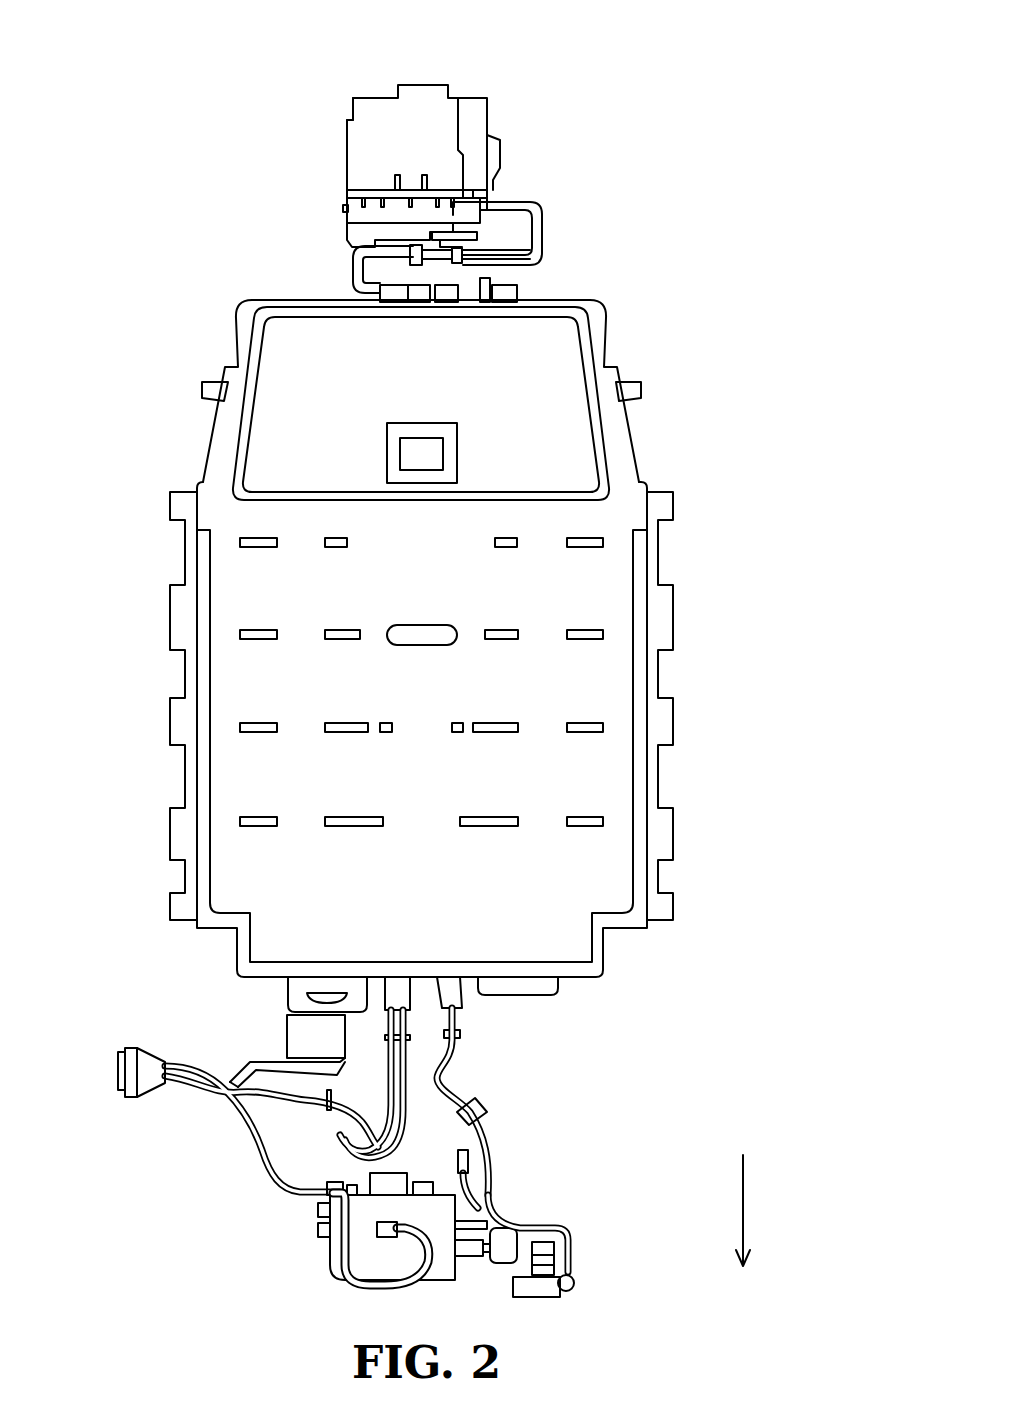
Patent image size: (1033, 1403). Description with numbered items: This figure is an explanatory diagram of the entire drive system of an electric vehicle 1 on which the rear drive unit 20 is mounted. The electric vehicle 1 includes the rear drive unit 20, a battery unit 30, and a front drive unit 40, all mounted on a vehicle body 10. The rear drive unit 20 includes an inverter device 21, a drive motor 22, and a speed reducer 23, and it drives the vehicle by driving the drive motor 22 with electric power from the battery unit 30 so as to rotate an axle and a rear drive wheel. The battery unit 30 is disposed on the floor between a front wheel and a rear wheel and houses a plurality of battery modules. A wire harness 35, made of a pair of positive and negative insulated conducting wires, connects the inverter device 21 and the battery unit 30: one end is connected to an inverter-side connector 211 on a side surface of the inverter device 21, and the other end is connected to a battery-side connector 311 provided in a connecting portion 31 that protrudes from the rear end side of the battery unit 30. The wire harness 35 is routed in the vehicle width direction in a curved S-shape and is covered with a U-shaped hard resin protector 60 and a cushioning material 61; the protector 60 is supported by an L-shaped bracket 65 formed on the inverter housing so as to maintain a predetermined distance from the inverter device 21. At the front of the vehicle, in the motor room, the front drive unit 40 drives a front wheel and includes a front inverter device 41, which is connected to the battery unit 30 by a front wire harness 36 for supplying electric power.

The electric vehicle 1 is at (583, 88).
The vehicle body 10 is at (676, 628).
The rear drive unit 20 is at (465, 129).
The inverter device 21 is at (365, 218).
The inverter-side connector 211 is at (483, 210).
The drive motor 22 is at (363, 158).
The speed reducer 23 is at (473, 150).
The battery unit 30 is at (596, 522).
The connecting portion 31 is at (387, 297).
The battery-side connector 311 is at (380, 292).
The wire harness 35 is at (358, 248).
The front wire harness 36 is at (483, 1090).
The front drive unit 40 is at (447, 1210).
The front inverter device 41 is at (380, 1250).
The protector 60 is at (535, 258).
The cushioning material 61 is at (362, 276).
The bracket 65 is at (450, 232).